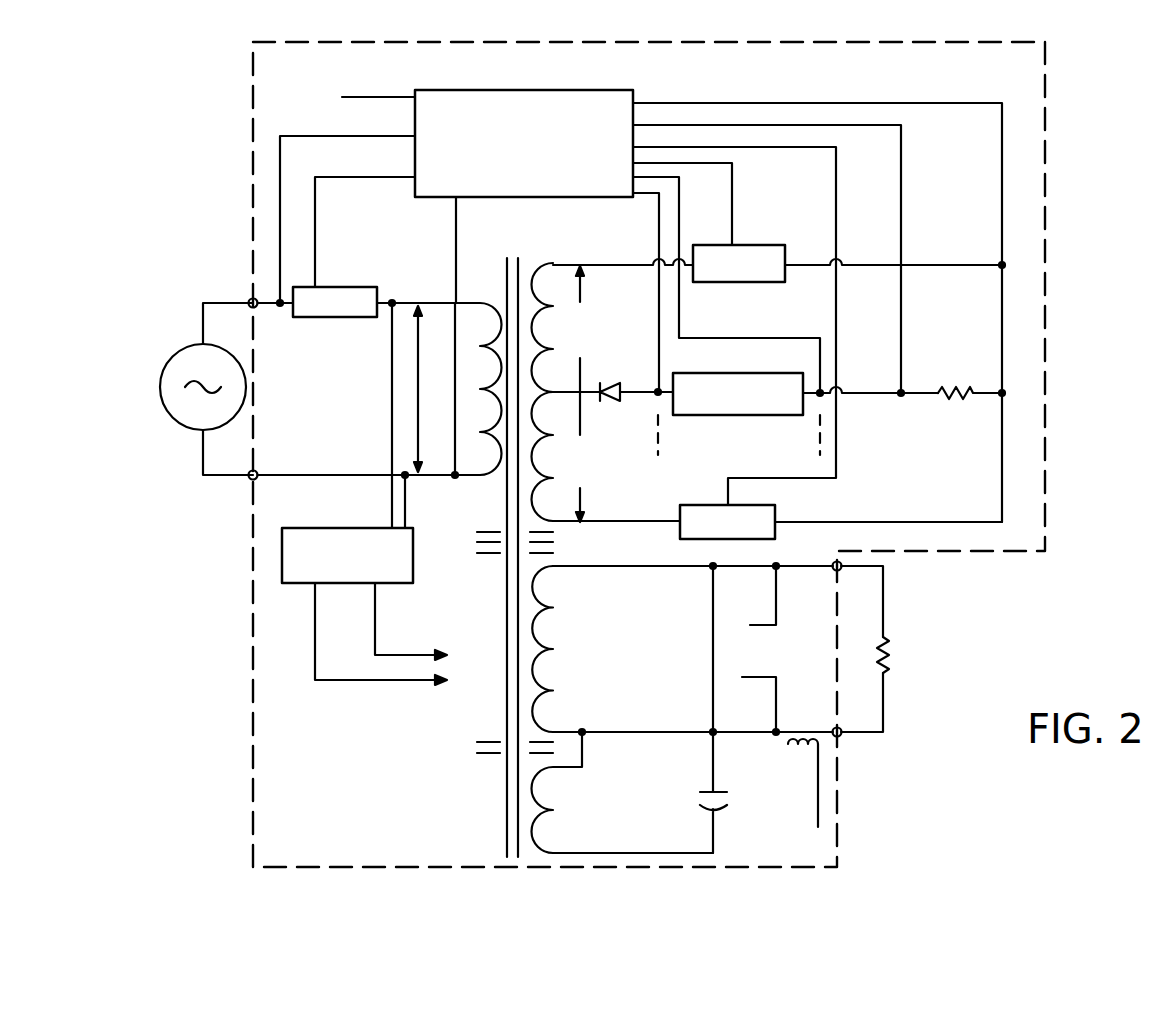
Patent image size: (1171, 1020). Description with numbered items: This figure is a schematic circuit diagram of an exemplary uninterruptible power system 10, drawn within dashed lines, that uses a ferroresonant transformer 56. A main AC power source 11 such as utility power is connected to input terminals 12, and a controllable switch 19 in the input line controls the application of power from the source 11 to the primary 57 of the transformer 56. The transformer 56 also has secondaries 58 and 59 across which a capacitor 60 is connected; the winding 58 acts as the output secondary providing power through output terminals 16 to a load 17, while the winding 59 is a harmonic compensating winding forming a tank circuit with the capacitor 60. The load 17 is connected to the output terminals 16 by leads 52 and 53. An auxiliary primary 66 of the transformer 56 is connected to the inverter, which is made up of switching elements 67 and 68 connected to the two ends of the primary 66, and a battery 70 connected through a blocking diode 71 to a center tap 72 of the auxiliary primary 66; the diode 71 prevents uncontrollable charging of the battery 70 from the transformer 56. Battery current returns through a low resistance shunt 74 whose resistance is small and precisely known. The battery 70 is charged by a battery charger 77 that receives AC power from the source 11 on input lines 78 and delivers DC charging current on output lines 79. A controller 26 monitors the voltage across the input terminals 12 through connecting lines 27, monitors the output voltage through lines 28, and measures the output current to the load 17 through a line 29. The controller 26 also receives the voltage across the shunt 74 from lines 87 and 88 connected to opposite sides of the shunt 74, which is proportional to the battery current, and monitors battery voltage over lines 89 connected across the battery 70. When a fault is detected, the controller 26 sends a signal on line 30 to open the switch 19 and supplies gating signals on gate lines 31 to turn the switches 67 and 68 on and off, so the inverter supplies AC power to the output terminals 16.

The uninterruptible power system 10 is at (1046, 196).
The main AC power source 11 is at (190, 428).
The input terminals 12 is at (250, 298).
The output terminals 16 is at (834, 571).
The load 17 is at (886, 680).
The controllable switch 19 is at (360, 287).
The controller 26 is at (634, 92).
The connecting lines 27 is at (325, 136).
The lines 28 is at (544, 85).
The line 29 is at (385, 97).
The line 30 is at (378, 177).
The gate lines 31 is at (733, 212).
The load lead 52 is at (884, 605).
The load lead 53 is at (867, 737).
The ferroresonant transformer 56 is at (496, 679).
The primary 57 is at (500, 305).
The secondary 58 is at (553, 642).
The secondary 59 is at (553, 790).
The capacitor 60 is at (718, 796).
The auxiliary primary 66 is at (553, 262).
The switching element 67 is at (766, 244).
The switching element 68 is at (710, 504).
The battery 70 is at (745, 416).
The diode 71 is at (622, 384).
The center tap 72 is at (552, 390).
The shunt 74 is at (957, 385).
The battery charger 77 is at (414, 546).
The input lines 78 is at (390, 412).
The output lines 79 is at (318, 590).
The line 87 is at (900, 212).
The line 88 is at (1000, 218).
The lines 89 is at (660, 315).